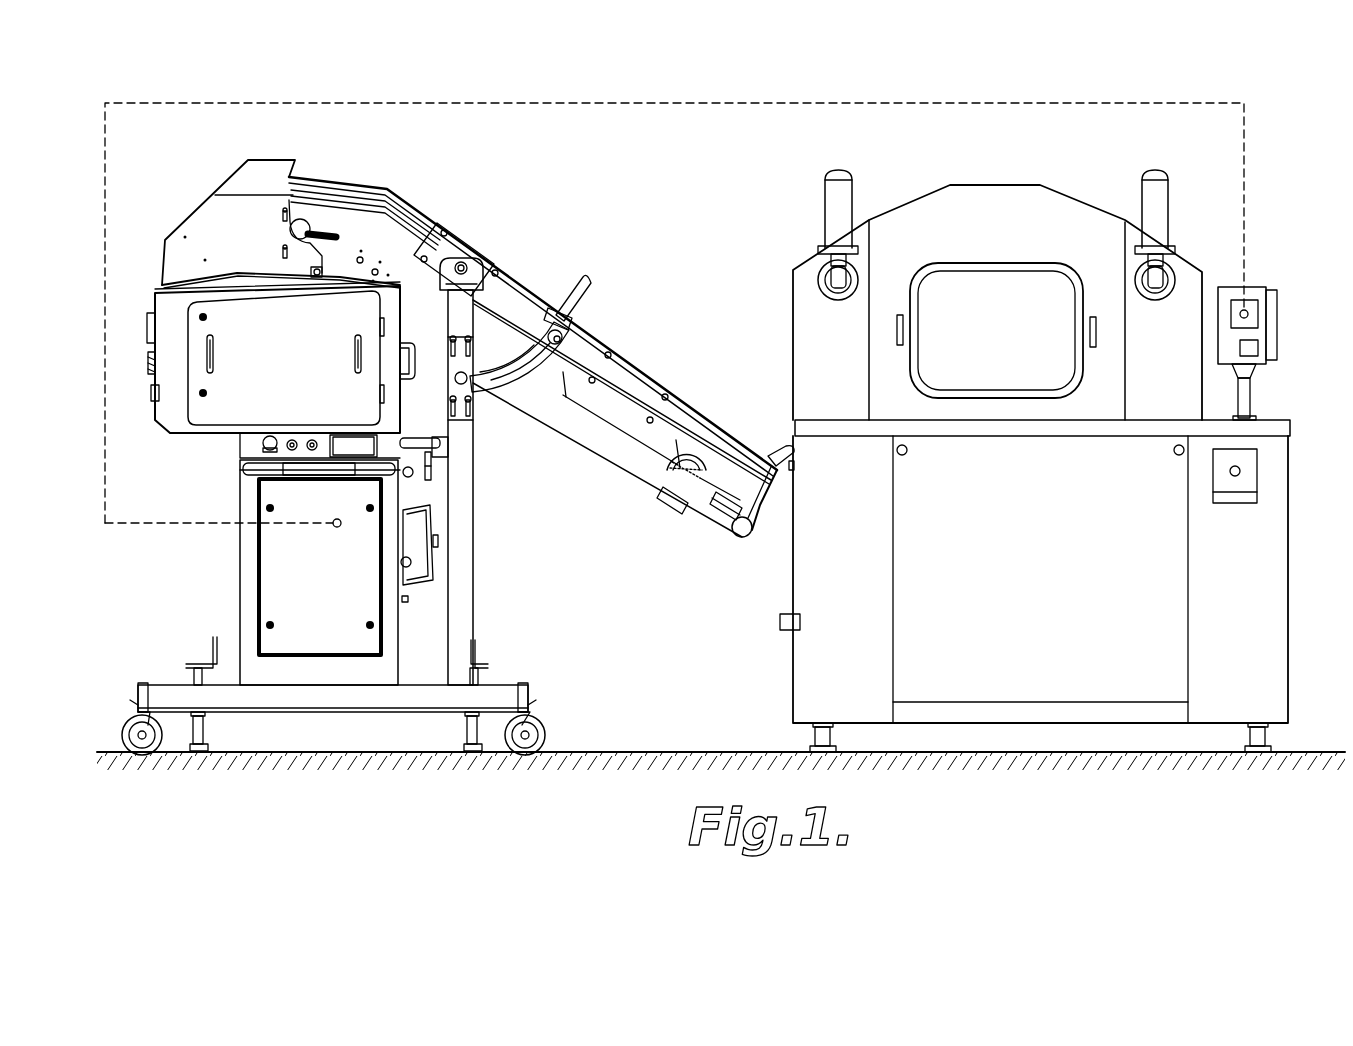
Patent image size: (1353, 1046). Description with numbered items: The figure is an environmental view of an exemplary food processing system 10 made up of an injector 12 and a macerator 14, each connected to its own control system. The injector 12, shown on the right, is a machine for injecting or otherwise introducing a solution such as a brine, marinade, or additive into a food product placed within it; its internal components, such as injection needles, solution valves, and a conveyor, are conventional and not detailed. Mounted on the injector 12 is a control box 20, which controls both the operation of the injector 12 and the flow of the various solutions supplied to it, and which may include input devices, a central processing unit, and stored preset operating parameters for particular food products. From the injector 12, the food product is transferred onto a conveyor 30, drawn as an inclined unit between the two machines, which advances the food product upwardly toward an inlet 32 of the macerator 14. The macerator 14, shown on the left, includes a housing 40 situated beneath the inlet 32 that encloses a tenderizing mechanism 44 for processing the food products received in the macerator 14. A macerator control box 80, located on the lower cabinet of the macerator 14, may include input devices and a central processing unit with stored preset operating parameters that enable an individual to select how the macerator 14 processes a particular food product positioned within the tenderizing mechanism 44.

The food processing system 10 is at (756, 92).
The injector 12 is at (776, 285).
The macerator 14 is at (192, 212).
The control box 20 is at (1278, 284).
The conveyor 30 is at (626, 354).
The inlet 32 is at (268, 160).
The housing 40 is at (168, 428).
The tenderizing mechanism 44 is at (142, 330).
The macerator control box 80 is at (270, 562).